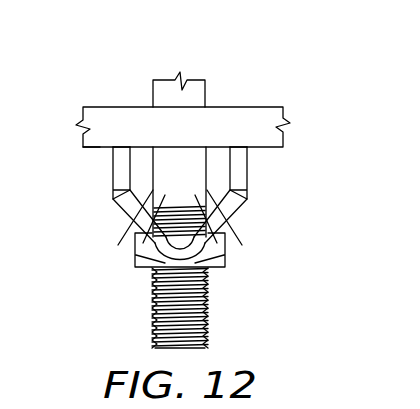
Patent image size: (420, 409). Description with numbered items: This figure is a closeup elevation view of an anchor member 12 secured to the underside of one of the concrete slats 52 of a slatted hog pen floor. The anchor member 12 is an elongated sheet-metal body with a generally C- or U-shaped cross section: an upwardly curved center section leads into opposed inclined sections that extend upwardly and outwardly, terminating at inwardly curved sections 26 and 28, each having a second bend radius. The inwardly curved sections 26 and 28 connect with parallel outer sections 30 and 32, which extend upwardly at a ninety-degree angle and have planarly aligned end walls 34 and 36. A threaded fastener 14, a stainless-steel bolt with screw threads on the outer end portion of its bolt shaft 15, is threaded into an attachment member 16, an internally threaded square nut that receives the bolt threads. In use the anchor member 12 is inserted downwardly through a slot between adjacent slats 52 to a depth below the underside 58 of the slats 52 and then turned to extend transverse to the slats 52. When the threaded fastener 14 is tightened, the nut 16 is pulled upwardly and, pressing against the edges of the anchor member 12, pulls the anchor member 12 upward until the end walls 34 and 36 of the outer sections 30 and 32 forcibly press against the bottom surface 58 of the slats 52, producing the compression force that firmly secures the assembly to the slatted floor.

The anchor member 12 is at (117, 218).
The threaded fastener 14 is at (121, 215).
The bolt shaft 15 is at (207, 310).
The attachment member 16 is at (214, 249).
The inwardly curved section 26 is at (120, 198).
The inwardly curved section 28 is at (240, 208).
The outer section 30 is at (120, 168).
The outer section 32 is at (237, 170).
The end wall 34 is at (122, 147).
The end wall 36 is at (237, 147).
The slat 52 is at (263, 115).
The bottom surface 58 is at (98, 152).